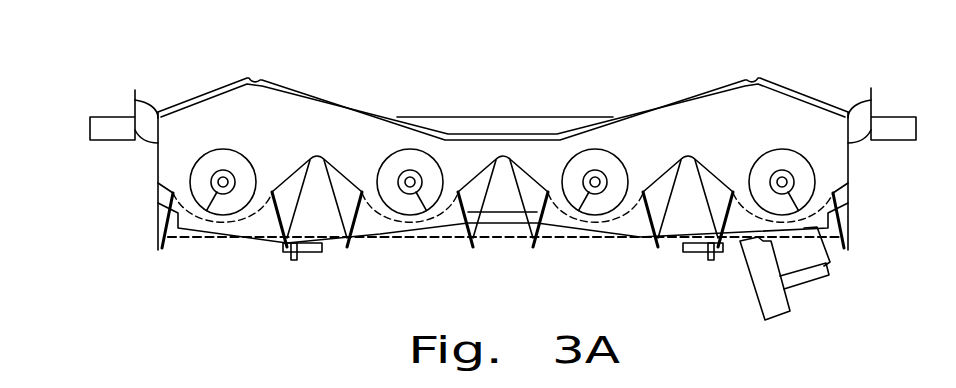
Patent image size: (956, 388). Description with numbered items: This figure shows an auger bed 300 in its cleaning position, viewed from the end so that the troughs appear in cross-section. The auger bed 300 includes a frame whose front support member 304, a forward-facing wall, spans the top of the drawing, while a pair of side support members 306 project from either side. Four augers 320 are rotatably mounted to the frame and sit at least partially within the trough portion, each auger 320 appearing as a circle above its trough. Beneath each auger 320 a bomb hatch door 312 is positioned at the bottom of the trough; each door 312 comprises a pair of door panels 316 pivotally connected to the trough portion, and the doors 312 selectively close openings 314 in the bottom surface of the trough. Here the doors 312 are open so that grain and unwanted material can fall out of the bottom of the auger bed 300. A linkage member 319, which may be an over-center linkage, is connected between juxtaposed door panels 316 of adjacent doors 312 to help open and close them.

The auger bed 300 is at (823, 73).
The front support member 304 is at (712, 118).
The side support members 306 is at (158, 158).
The bomb hatch doors 312 is at (112, 229).
The openings 314 is at (783, 246).
The door panels 316 is at (162, 246).
The linkage member 319 is at (493, 238).
The augers 320 is at (240, 152).